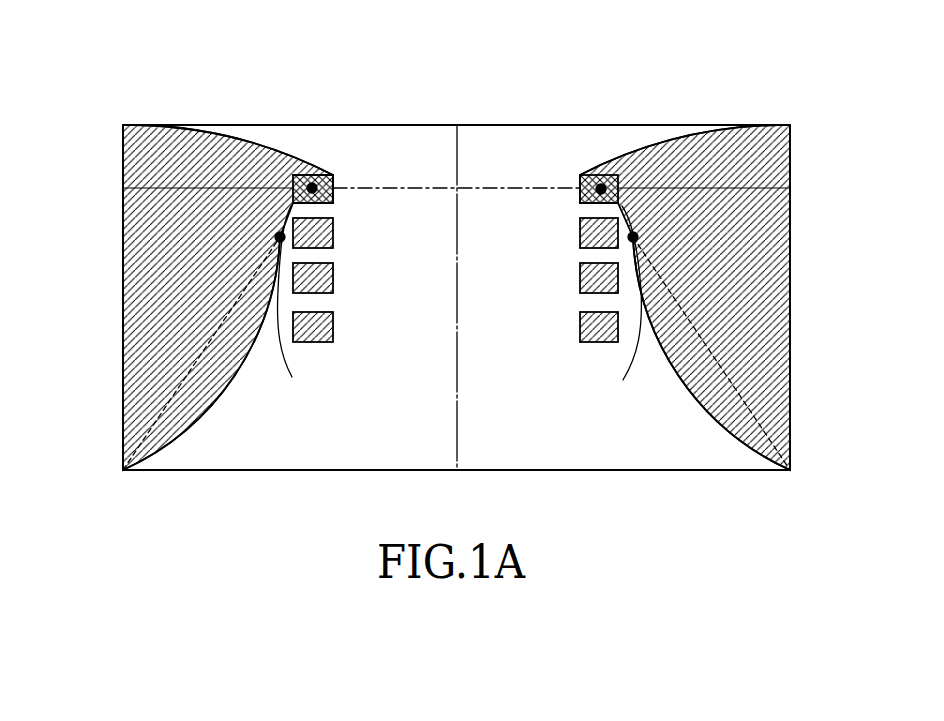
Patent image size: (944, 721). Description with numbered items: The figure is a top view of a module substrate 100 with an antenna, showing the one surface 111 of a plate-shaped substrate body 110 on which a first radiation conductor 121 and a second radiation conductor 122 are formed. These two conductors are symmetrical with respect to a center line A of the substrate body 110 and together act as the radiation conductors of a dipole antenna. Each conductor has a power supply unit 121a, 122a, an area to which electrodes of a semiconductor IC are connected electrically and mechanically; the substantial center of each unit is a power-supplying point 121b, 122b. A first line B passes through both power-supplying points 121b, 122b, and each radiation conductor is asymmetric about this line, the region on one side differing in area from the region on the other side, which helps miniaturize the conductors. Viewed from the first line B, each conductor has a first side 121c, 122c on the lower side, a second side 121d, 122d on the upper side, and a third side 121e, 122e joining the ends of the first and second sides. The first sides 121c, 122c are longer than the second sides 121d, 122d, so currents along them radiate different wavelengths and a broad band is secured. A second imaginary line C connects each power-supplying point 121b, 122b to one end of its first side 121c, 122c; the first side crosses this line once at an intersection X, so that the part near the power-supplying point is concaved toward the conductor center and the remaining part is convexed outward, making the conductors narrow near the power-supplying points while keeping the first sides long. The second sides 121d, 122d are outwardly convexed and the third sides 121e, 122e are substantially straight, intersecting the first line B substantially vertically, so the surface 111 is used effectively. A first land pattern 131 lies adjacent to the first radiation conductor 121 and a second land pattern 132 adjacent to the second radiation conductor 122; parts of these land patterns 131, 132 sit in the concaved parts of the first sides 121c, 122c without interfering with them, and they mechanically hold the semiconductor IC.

The module substrate with an antenna 100 is at (793, 25).
The substrate body 110 is at (472, 125).
The one surface of the substrate body 111 is at (373, 437).
The first radiation conductor 121 is at (772, 350).
The power supply unit of the first radiation conductor 121a is at (601, 189).
The power-supplying point of the first radiation conductor 121b is at (582, 203).
The first side of the first radiation conductor 121c is at (707, 418).
The second side of the first radiation conductor 121d is at (656, 142).
The third side of the first radiation conductor 121e is at (791, 245).
The second radiation conductor 122 is at (140, 353).
The power supply unit of the second radiation conductor 122a is at (312, 188).
The power-supplying point of the second radiation conductor 122b is at (328, 176).
The first side of the second radiation conductor 122c is at (206, 418).
The second side of the second radiation conductor 122d is at (257, 143).
The third side of the second radiation conductor 122e is at (122, 233).
The first land pattern 131 is at (580, 323).
The second land pattern 132 is at (333, 323).
The center line A is at (458, 362).
The first line B is at (538, 187).
The second imaginary line C is at (677, 383).
The intersection X is at (458, 302).